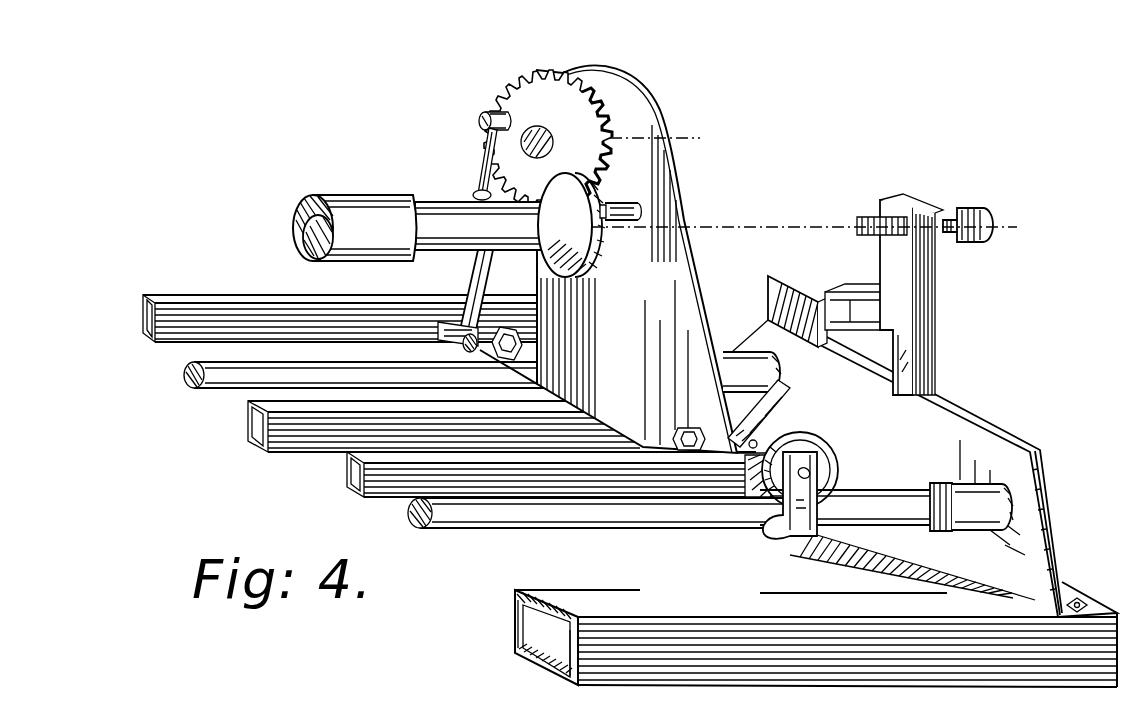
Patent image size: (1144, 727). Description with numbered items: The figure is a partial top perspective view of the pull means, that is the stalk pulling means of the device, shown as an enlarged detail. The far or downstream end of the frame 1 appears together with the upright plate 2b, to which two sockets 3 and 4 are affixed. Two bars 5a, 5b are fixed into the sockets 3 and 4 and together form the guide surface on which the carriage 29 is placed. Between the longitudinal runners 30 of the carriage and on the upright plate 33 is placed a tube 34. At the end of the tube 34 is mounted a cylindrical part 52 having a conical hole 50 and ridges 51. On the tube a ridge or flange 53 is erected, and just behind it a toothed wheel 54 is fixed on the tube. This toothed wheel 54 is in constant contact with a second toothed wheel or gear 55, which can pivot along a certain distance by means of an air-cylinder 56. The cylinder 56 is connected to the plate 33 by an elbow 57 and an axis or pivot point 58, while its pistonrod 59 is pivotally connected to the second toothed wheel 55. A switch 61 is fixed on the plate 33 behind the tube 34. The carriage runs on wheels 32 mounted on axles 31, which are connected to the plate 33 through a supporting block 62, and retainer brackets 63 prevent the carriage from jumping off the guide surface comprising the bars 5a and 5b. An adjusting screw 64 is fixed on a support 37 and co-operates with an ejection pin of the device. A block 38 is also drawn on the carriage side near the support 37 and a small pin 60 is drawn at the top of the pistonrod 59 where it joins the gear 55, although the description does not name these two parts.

The frame 1 is at (280, 446).
The upright plate 2b is at (955, 414).
The socket 3 is at (726, 366).
The socket 4 is at (972, 492).
The bar 5a is at (200, 386).
The bar 5b is at (558, 522).
The carriage 29 is at (694, 130).
The longitudinal runners 30 is at (218, 310).
The axle 31 is at (790, 435).
The wheel 32 is at (826, 455).
The upright plate 33 is at (672, 215).
The tube 34 is at (445, 208).
The support 37 is at (930, 292).
The block 38 is at (787, 292).
The conical hole 50 is at (302, 206).
The ridges 51 is at (303, 240).
The cylindrical part 52 is at (366, 206).
The flange 53 is at (582, 275).
The toothed wheel 54 is at (606, 258).
The second toothed wheel 55 is at (520, 74).
The air-cylinder 56 is at (484, 290).
The elbow 57 is at (446, 336).
The pivot point 58 is at (470, 352).
The pistonrod 59 is at (487, 170).
The pin 60 is at (480, 115).
The switch 61 is at (636, 205).
The supporting block 62 is at (758, 412).
The retainer bracket 63 is at (776, 540).
The adjusting screw 64 is at (952, 216).